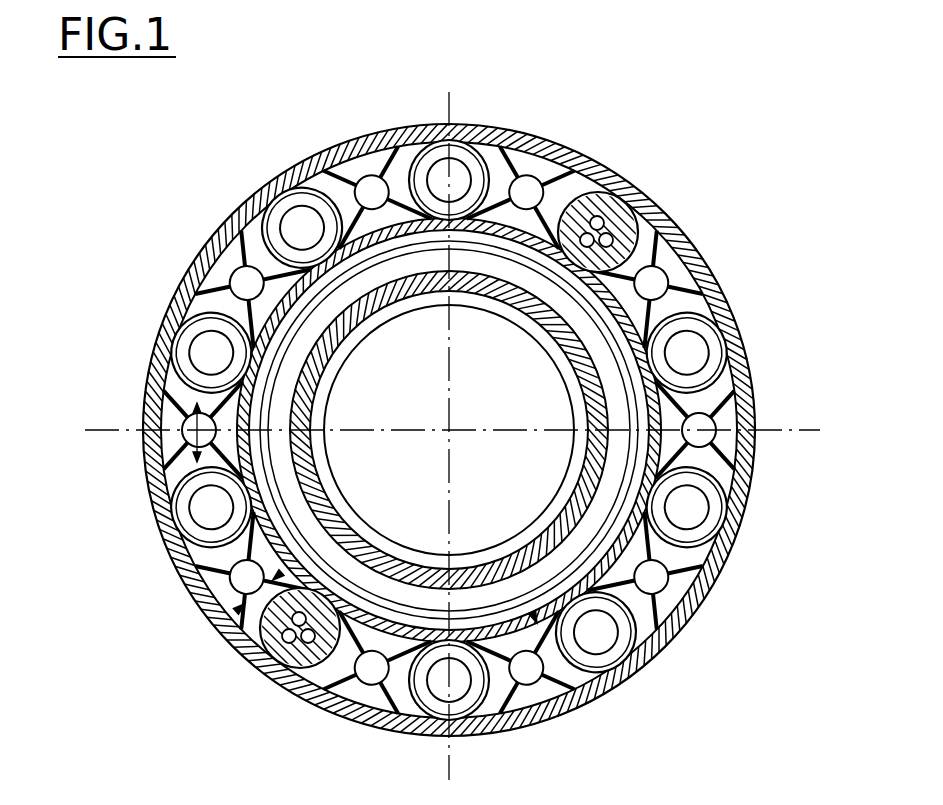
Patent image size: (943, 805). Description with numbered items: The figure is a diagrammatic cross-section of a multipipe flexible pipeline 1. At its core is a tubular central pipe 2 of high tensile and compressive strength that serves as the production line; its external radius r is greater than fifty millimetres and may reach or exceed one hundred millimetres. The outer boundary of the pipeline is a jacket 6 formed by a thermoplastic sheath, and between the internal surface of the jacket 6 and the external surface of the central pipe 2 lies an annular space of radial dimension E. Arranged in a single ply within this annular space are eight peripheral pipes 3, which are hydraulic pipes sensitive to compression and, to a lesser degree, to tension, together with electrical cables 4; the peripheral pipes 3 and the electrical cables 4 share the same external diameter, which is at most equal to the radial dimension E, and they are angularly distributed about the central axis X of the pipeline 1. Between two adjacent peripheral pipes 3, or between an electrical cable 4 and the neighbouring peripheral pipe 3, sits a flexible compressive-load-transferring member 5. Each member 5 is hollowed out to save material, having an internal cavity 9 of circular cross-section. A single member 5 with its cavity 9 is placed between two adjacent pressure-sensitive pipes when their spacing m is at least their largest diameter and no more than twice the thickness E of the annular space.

The flexible pipeline 1 is at (429, 402).
The tubular central pipe 2 is at (708, 588).
The peripheral pipes 3 is at (438, 175).
The electrical cables 4 is at (626, 204).
The compressive-load-transferring members 5 is at (372, 172).
The jacket 6 is at (693, 250).
The internal cavities 9 is at (190, 403).
The central axis X is at (443, 428).
The spacing of adjacent peripheral pipes m is at (190, 462).
The radial dimension of the annular space E is at (449, 430).
The external radius of the central element r is at (449, 430).